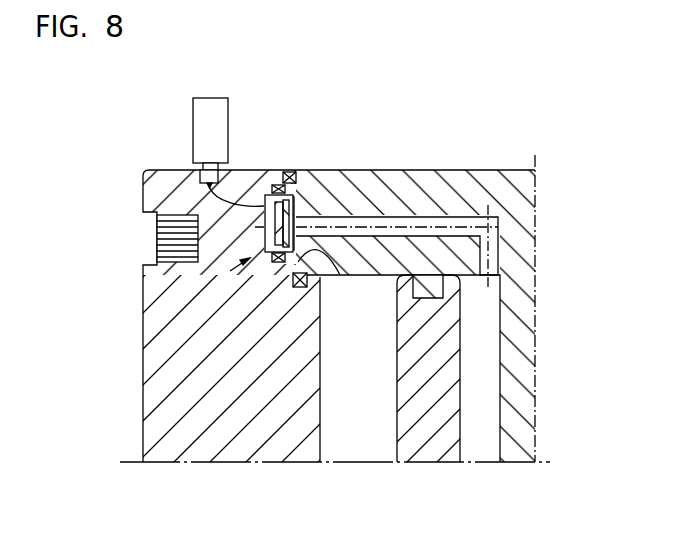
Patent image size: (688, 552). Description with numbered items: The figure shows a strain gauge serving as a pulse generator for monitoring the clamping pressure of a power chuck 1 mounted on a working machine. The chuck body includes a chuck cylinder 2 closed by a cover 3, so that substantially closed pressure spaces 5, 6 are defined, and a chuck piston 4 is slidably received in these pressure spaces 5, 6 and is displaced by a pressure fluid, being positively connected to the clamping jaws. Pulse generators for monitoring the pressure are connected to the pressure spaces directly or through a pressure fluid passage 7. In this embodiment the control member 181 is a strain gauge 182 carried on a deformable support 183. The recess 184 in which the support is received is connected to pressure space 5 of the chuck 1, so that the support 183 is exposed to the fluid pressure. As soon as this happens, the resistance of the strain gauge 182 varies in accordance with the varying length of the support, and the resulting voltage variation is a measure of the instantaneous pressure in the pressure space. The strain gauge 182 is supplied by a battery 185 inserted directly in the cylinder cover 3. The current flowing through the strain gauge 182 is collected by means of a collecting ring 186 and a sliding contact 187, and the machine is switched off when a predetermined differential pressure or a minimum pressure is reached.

The power chuck 1 is at (389, 168).
The chuck cylinder 2 is at (428, 178).
The cover 3 is at (180, 400).
The chuck piston 4 is at (447, 407).
The pressure space 5 is at (484, 355).
The pressure space 6 is at (356, 445).
The pressure fluid passage 7 is at (466, 215).
The control member 181 is at (246, 261).
The strain gauge 182 is at (266, 225).
The deformable support 183 is at (266, 200).
The recess 184 is at (318, 272).
The battery 185 is at (173, 265).
The collecting ring 186 is at (200, 176).
The sliding contact 187 is at (220, 122).